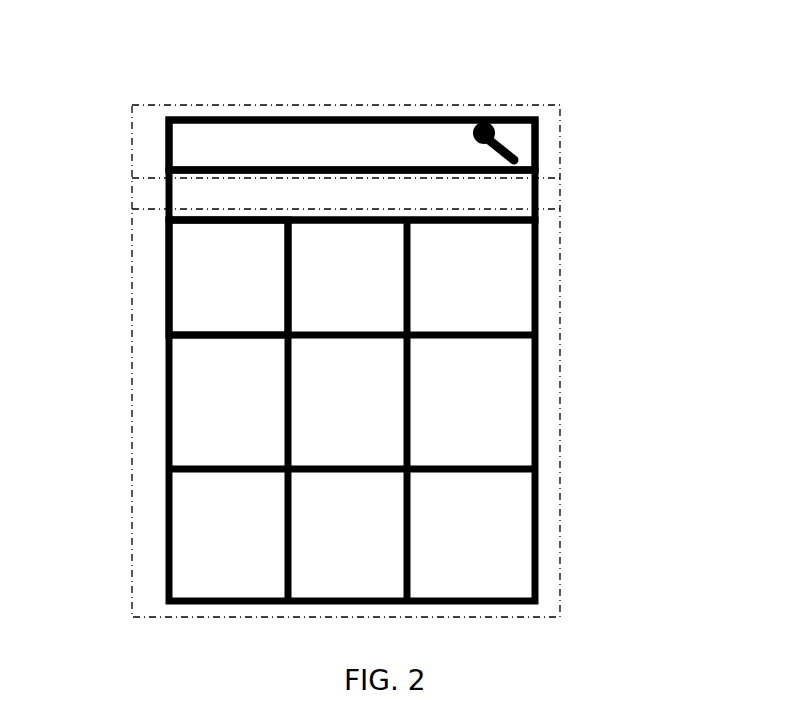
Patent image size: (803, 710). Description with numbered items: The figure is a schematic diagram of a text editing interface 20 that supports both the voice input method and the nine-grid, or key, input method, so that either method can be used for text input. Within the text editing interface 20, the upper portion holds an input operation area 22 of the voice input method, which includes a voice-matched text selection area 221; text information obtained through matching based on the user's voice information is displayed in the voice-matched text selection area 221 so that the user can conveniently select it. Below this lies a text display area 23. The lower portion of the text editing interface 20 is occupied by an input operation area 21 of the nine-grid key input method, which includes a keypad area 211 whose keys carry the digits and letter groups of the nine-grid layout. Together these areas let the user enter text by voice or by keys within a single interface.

The text editing interface 20 is at (362, 69).
The input operation area 21 is at (559, 366).
The keypad area 211 is at (198, 307).
The input operation area 22 is at (560, 150).
The voice-matched text selection area 221 is at (262, 140).
The text display area 23 is at (210, 197).